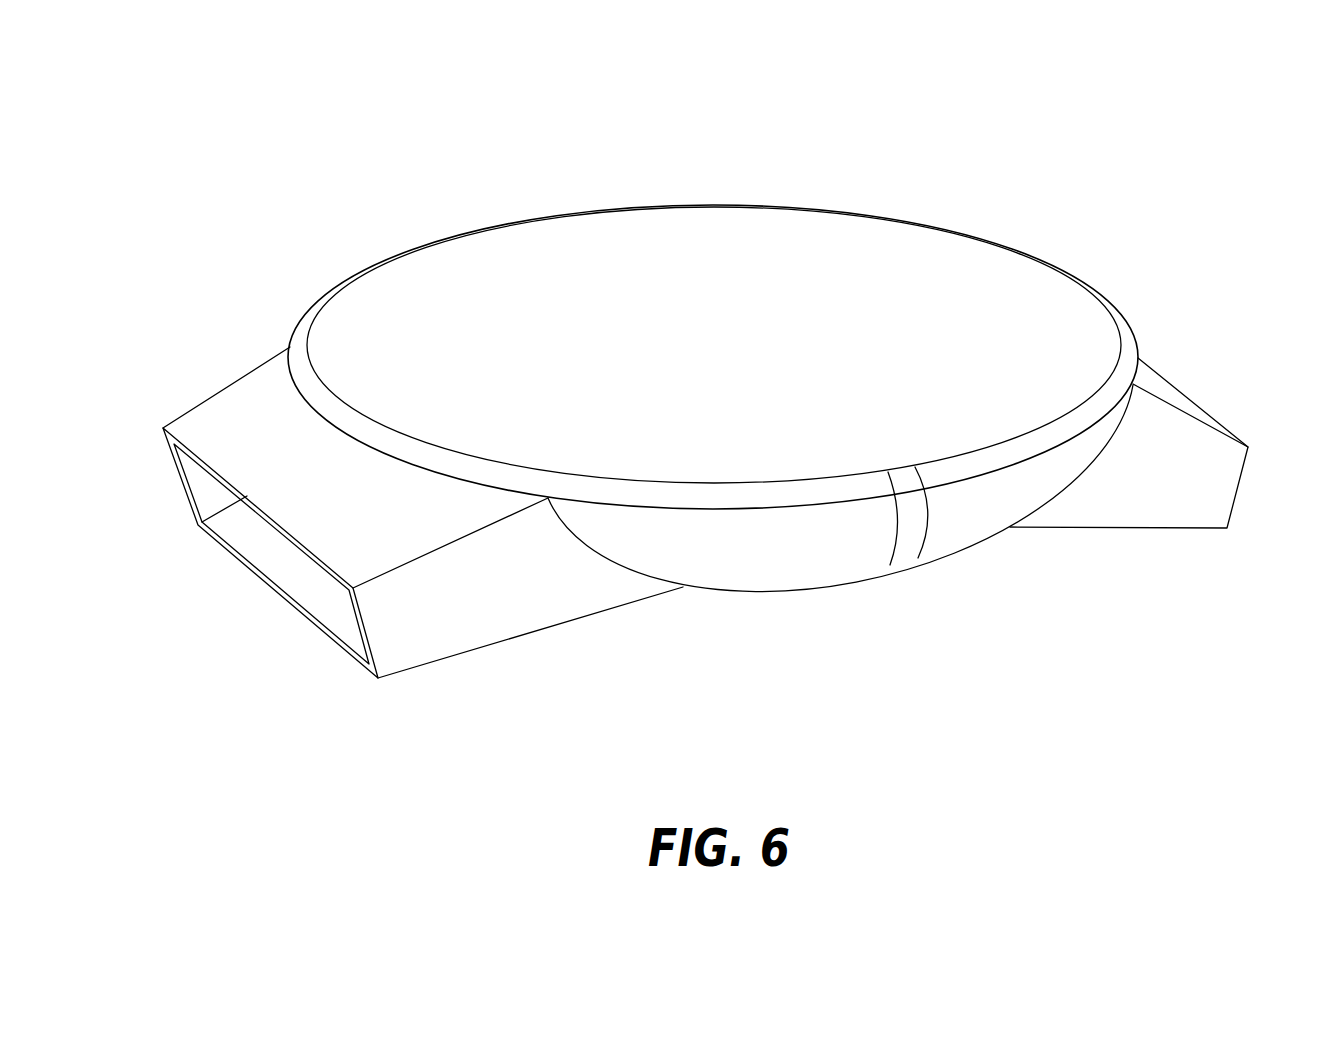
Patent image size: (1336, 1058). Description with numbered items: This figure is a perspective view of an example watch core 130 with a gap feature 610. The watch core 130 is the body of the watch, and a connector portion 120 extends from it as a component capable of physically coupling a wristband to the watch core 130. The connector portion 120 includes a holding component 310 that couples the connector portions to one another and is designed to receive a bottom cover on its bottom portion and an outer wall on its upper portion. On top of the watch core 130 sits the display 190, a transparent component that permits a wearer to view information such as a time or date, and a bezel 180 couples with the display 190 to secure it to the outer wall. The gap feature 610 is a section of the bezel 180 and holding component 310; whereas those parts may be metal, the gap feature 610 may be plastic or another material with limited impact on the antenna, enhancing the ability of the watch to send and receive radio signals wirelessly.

The watch core 130 is at (350, 92).
The connector portion 120 is at (228, 413).
The bezel 180 is at (297, 352).
The display 190 is at (592, 242).
The holding component 310 is at (978, 515).
The gap feature 610 is at (915, 528).